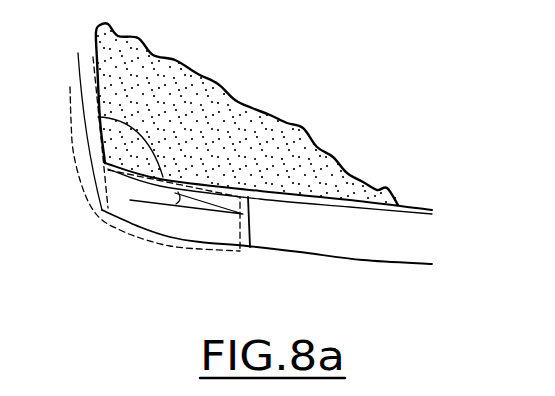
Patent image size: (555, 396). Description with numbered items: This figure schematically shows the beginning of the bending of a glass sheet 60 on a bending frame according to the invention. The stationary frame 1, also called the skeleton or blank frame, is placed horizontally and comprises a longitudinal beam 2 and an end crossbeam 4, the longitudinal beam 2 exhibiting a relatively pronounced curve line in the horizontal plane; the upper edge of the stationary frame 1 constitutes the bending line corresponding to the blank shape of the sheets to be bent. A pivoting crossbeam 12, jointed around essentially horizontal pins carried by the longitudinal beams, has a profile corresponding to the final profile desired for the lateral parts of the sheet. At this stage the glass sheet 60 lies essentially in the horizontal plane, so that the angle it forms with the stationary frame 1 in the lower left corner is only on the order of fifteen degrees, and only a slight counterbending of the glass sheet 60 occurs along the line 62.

The stationary frame 1 is at (289, 224).
The longitudinal beam 2 is at (358, 242).
The end crossbeam 4 is at (82, 115).
The pivoting crossbeam 12 is at (74, 168).
The glass sheet 60 is at (255, 133).
The counterbending line 62 is at (143, 126).